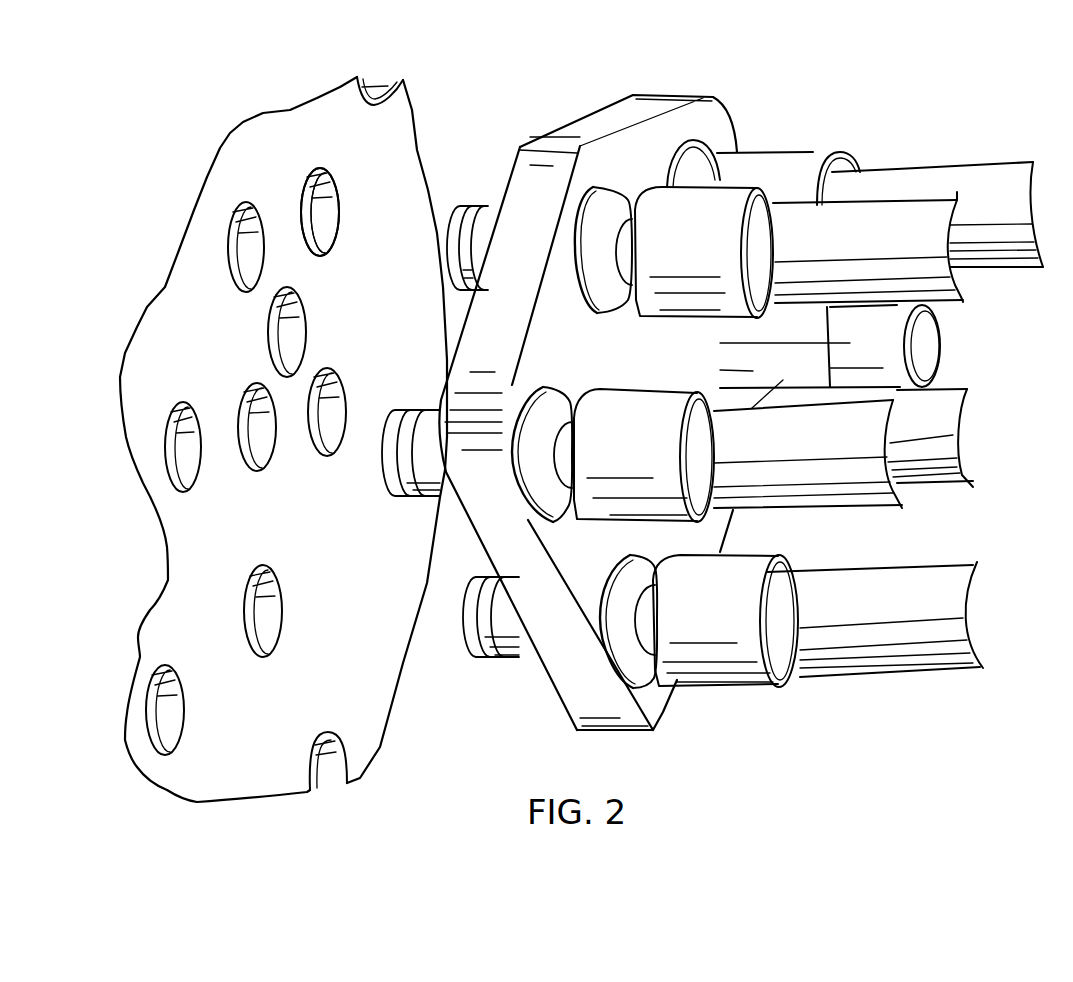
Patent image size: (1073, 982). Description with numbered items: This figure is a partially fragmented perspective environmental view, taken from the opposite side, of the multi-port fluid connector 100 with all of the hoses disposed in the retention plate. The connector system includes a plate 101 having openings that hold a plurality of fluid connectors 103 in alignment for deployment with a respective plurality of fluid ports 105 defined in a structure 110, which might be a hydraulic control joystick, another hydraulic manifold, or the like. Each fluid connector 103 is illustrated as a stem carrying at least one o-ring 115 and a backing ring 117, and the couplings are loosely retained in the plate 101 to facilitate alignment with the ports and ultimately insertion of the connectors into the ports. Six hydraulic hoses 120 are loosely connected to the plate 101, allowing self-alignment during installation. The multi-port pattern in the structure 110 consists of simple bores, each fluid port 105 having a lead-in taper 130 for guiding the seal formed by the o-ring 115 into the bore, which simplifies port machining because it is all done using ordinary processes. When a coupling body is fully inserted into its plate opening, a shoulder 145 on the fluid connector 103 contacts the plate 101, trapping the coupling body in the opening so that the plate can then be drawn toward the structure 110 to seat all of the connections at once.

The multi-port fluid connector 100 is at (595, 63).
The plate 101 is at (672, 92).
The fluid connector 103 is at (607, 386).
The fluid port 105 is at (344, 150).
The structure 110 is at (407, 95).
The o-ring 115 is at (500, 658).
The backing ring 117 is at (520, 657).
The hydraulic hose 120 is at (858, 668).
The lead-in taper 130 is at (327, 230).
The shoulder 145 is at (662, 718).